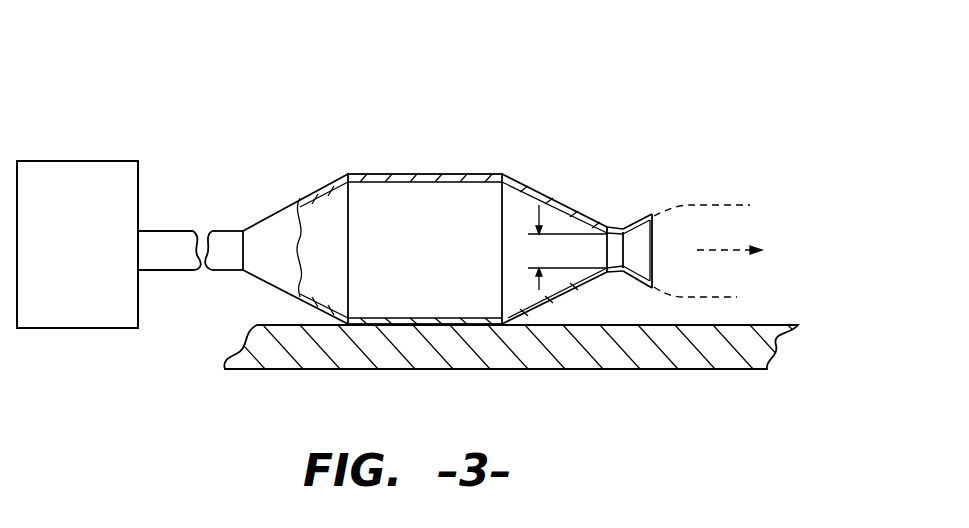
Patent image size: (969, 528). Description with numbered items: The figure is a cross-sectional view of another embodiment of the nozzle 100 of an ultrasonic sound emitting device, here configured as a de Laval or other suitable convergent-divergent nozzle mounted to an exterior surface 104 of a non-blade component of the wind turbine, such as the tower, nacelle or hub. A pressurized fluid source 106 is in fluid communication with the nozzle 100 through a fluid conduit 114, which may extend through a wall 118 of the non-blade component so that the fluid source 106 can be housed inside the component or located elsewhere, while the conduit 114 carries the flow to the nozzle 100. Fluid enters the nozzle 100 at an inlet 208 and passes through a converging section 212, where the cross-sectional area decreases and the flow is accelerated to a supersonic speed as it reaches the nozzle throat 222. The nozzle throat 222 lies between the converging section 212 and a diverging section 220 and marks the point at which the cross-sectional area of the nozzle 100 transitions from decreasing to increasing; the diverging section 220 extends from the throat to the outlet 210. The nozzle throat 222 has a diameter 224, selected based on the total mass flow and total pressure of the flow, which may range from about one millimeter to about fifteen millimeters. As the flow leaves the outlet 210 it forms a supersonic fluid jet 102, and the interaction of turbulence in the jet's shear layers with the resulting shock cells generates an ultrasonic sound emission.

The nozzle 100 is at (612, 92).
The fluid jet 102 is at (722, 203).
The exterior surface 104 is at (722, 326).
The pressurized fluid source 106 is at (97, 249).
The fluid conduit 114 is at (166, 246).
The wall 118 is at (660, 354).
The inlet 208 is at (345, 194).
The outlet 210 is at (660, 235).
The converging section 212 is at (617, 218).
The diverging section 220 is at (648, 215).
The nozzle throat 222 is at (613, 262).
The diameter 224 is at (533, 190).